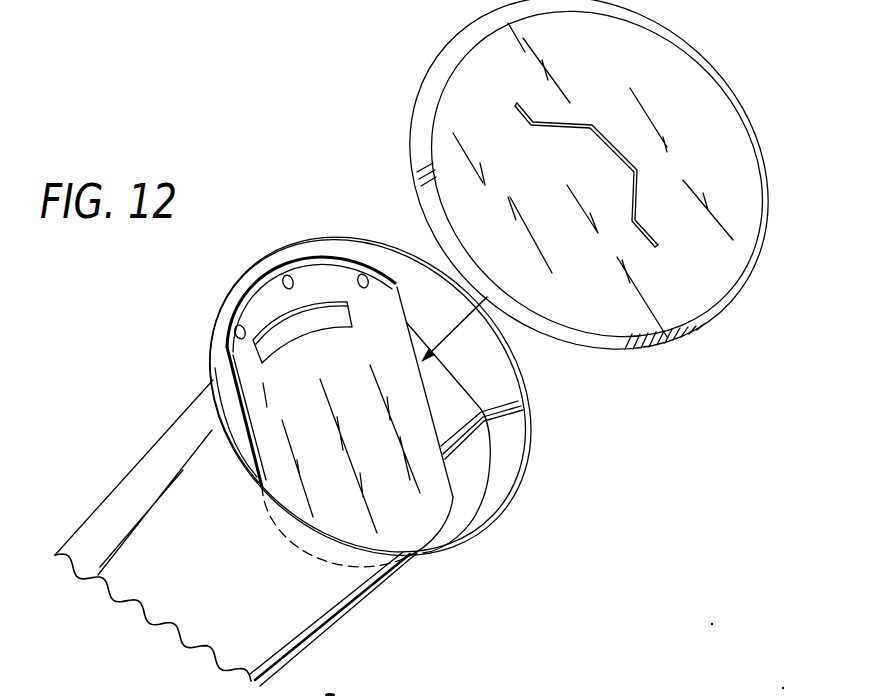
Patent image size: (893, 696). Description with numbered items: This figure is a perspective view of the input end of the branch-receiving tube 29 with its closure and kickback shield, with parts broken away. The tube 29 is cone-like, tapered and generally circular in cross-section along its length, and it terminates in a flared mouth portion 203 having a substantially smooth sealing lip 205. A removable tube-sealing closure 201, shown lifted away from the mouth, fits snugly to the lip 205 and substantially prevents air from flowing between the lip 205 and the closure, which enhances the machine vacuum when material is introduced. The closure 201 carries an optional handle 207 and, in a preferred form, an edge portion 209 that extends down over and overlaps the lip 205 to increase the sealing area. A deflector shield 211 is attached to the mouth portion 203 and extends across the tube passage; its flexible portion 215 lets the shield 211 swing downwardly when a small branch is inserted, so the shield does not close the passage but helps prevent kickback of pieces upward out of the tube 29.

The tube-sealing closure 201 is at (383, 108).
The flared mouth portion 203 is at (550, 485).
The sealing lip 205 is at (529, 433).
The handle 207 is at (528, 120).
The edge portion 209 is at (600, 341).
The deflector shield 211 is at (313, 403).
The flexible portion 215 is at (245, 363).
The tube 29 is at (343, 614).